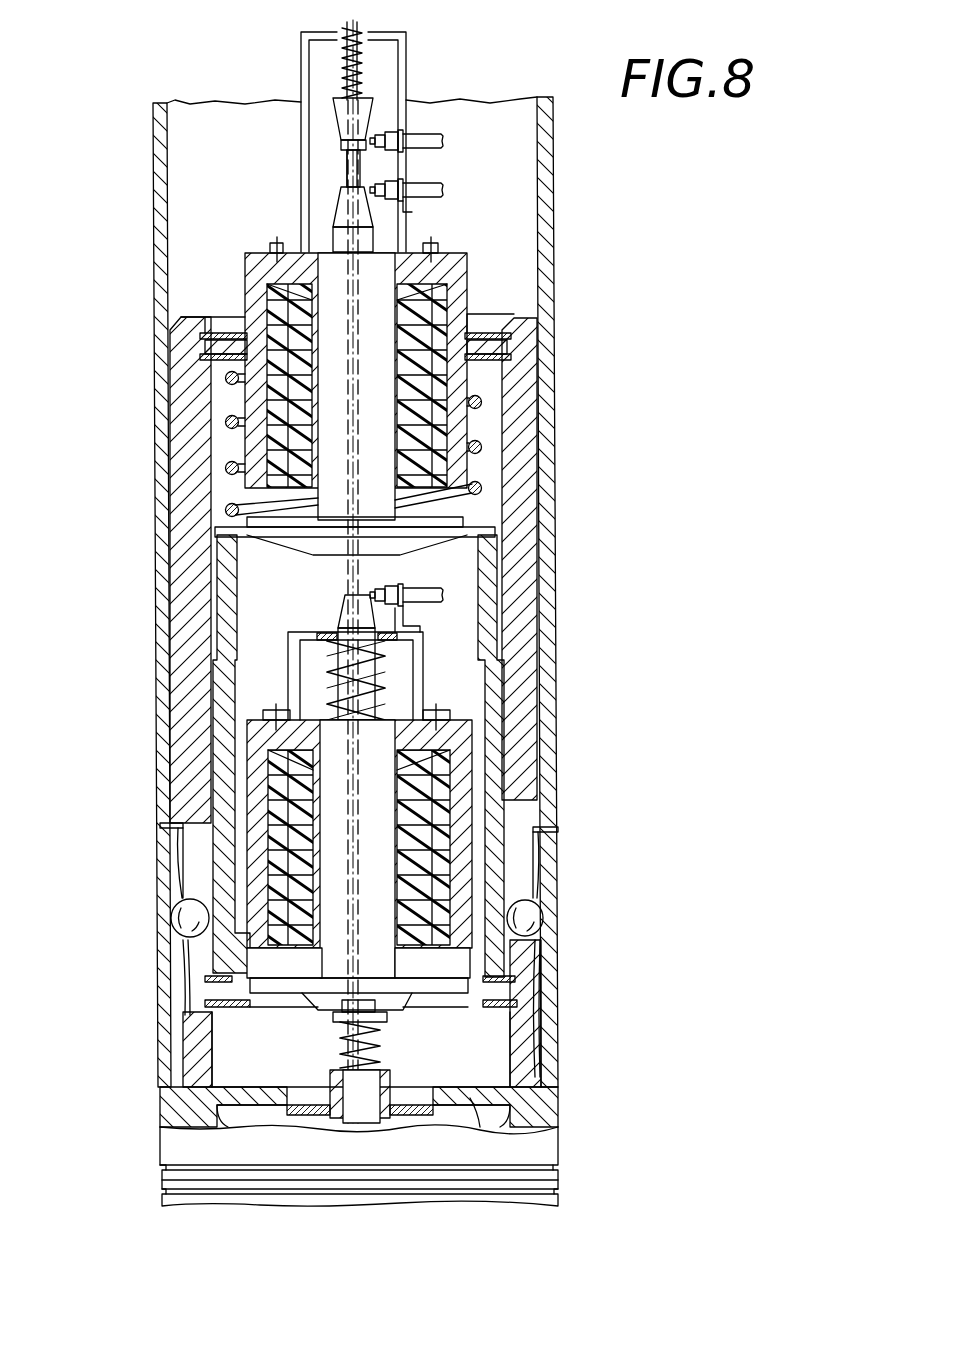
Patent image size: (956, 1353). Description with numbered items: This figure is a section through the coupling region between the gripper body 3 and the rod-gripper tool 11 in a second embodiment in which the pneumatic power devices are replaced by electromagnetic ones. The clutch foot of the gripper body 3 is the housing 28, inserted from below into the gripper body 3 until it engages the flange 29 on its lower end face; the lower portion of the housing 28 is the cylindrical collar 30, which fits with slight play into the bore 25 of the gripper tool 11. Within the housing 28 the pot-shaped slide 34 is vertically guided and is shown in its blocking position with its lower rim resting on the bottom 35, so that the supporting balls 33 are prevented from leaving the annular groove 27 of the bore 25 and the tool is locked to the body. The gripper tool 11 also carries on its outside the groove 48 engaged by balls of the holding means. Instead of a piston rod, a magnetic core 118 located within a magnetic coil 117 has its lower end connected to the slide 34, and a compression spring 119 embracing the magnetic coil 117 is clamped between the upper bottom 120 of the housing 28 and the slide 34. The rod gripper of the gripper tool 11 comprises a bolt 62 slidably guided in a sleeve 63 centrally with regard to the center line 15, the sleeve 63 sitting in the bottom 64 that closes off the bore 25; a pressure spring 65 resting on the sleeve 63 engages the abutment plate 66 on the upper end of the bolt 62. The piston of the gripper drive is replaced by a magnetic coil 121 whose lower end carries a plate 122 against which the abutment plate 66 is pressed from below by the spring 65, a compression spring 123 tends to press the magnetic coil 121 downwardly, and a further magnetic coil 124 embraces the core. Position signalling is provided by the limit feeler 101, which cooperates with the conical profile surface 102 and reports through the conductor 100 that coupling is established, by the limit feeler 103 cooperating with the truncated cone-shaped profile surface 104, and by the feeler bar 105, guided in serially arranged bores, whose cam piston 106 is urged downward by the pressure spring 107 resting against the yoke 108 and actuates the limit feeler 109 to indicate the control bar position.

The gripper body 3 is at (152, 212).
The gripper tool 11 is at (148, 1107).
The center line 15 is at (363, 1112).
The bore 25 is at (180, 1078).
The annular groove 27 is at (172, 900).
The housing 28 is at (188, 612).
The flange 29 is at (545, 818).
The cylindrical collar 30 is at (200, 1040).
The supporting ball 33 is at (537, 912).
The slide 34 is at (230, 548).
The bottom 35 is at (480, 985).
The groove 48 is at (160, 1177).
The bolt 62 is at (345, 1115).
The sleeve 63 is at (410, 1115).
The bottom 64 is at (478, 1100).
The pressure spring 65 is at (375, 1048).
The abutment plate 66 is at (388, 1017).
The conductor 100 is at (435, 183).
The limit feeler 101 is at (410, 198).
The conical profile surface 102 is at (343, 207).
The limit feeler 103 is at (403, 588).
The truncated cone-shaped profile surface 104 is at (343, 618).
The feeler bar 105 is at (352, 165).
The cam piston 106 is at (340, 110).
The pressure spring 107 is at (362, 45).
The yoke 108 is at (406, 52).
The limit feeler 109 is at (410, 130).
The magnetic coil 117 is at (470, 268).
The magnetic core 118 is at (340, 405).
The compression spring 119 is at (233, 468).
The upper bottom 120 is at (232, 348).
The magnetic coil 121 is at (333, 830).
The plate 122 is at (305, 1000).
The compression spring 123 is at (380, 655).
The magnetic coil 124 is at (293, 875).